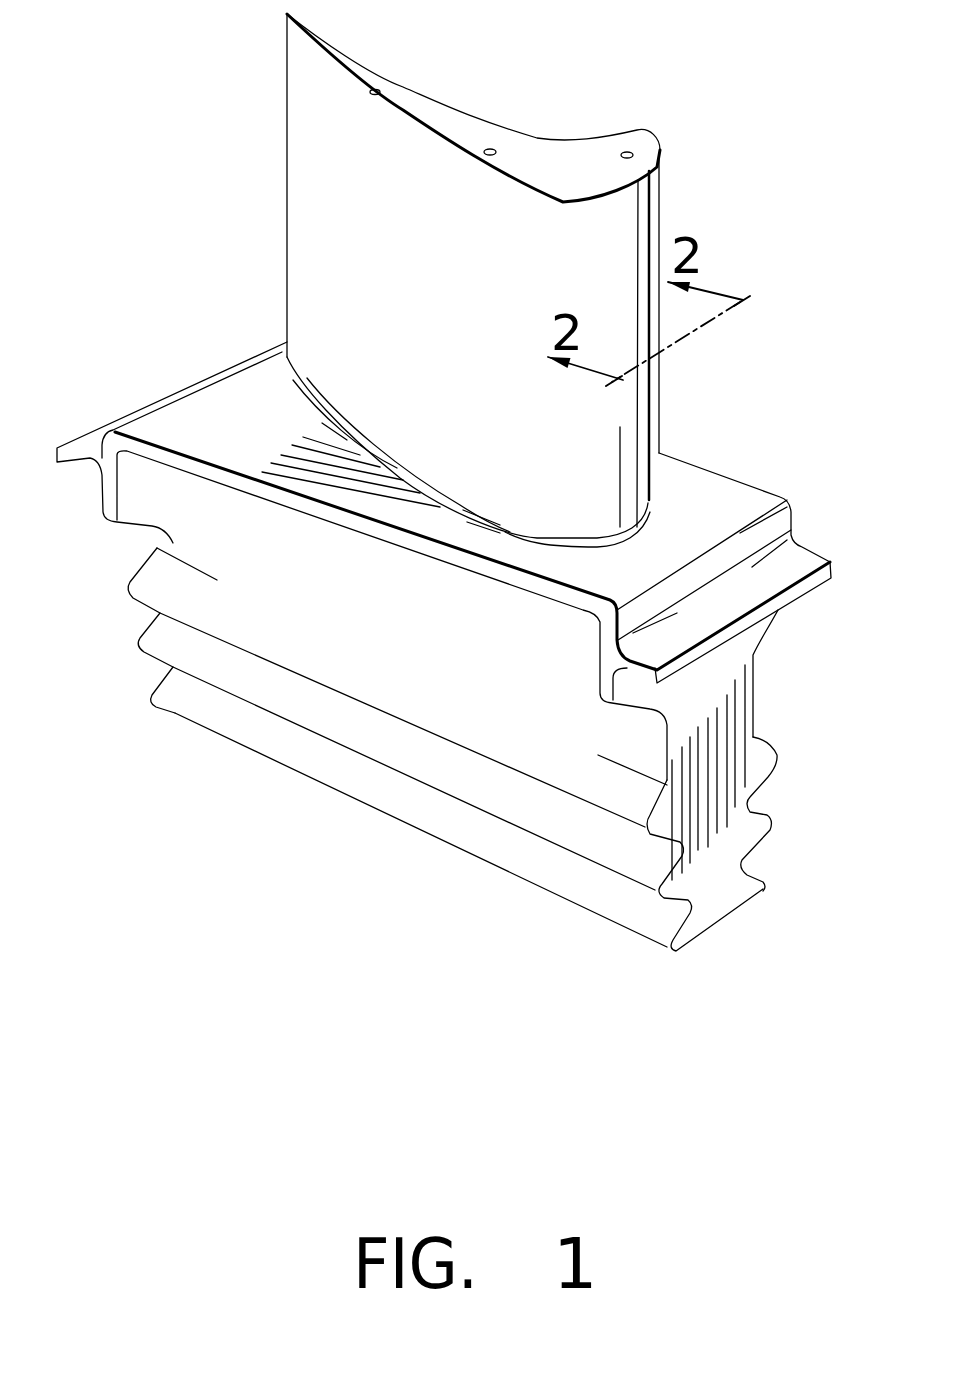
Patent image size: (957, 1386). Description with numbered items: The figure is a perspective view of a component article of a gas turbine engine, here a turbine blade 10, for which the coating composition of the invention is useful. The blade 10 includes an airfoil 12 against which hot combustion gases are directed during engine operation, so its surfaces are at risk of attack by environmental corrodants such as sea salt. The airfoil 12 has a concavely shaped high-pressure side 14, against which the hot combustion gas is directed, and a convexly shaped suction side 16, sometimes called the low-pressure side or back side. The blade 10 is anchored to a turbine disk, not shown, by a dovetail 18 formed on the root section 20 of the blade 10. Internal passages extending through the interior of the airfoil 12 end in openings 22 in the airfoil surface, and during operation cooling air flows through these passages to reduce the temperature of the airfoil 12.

The turbine blade 10 is at (237, 101).
The airfoil 12 is at (303, 253).
The high-pressure side 14 is at (403, 90).
The suction side 16 is at (388, 288).
The dovetail 18 is at (776, 760).
The root section 20 is at (713, 500).
The openings 22 is at (625, 147).